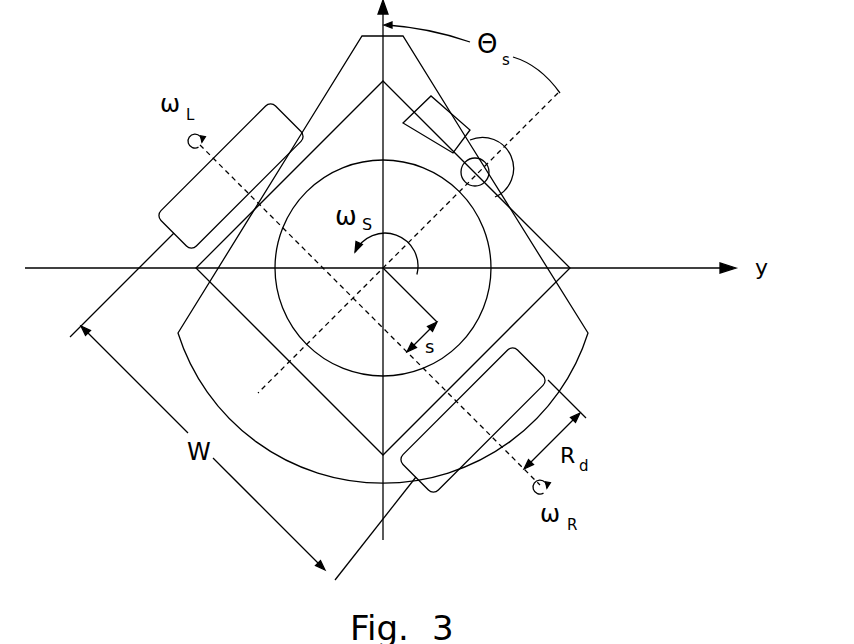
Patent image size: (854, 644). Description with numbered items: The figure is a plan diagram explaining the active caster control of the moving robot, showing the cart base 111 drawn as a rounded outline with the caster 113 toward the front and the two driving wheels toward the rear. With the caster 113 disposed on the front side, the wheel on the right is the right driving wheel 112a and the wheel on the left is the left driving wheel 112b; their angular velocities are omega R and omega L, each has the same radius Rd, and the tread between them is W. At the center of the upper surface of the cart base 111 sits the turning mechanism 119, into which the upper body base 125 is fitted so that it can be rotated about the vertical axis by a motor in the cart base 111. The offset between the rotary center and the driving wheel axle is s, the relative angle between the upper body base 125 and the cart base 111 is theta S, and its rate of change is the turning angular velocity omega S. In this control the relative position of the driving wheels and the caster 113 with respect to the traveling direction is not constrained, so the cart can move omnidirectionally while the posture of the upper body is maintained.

The cart base 111 is at (527, 220).
The right driving wheel 112a is at (450, 487).
The left driving wheel 112b is at (170, 203).
The caster 113 is at (470, 139).
The turning mechanism 119 is at (490, 258).
The upper body base 125 is at (357, 45).